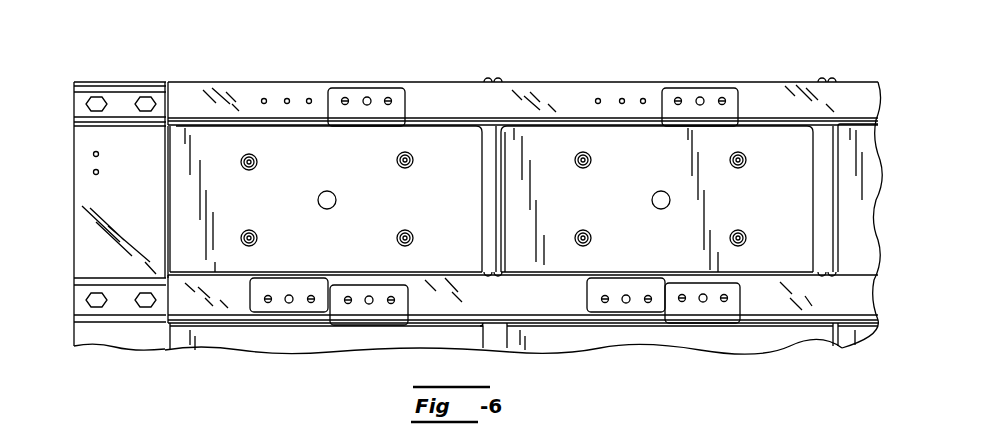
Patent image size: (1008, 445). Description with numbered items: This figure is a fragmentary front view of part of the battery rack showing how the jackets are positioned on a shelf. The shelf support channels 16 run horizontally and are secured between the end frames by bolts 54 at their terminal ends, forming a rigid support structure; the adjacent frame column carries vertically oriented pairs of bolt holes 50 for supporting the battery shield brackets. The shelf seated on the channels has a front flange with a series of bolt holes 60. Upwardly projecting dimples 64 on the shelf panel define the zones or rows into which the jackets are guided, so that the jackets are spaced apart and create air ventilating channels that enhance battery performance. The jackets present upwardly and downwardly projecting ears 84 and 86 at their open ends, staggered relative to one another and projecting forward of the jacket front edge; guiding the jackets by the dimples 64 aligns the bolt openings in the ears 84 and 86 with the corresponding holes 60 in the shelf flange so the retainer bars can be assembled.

The shelf support channel 16 is at (118, 82).
The bolt holes 50 is at (93, 154).
The bolts 54 is at (84, 108).
The bolt holes 60 is at (264, 98).
The dimples 64 is at (488, 78).
The upwardly projecting ear 84 is at (378, 88).
The downwardly projecting ear 86 is at (292, 312).